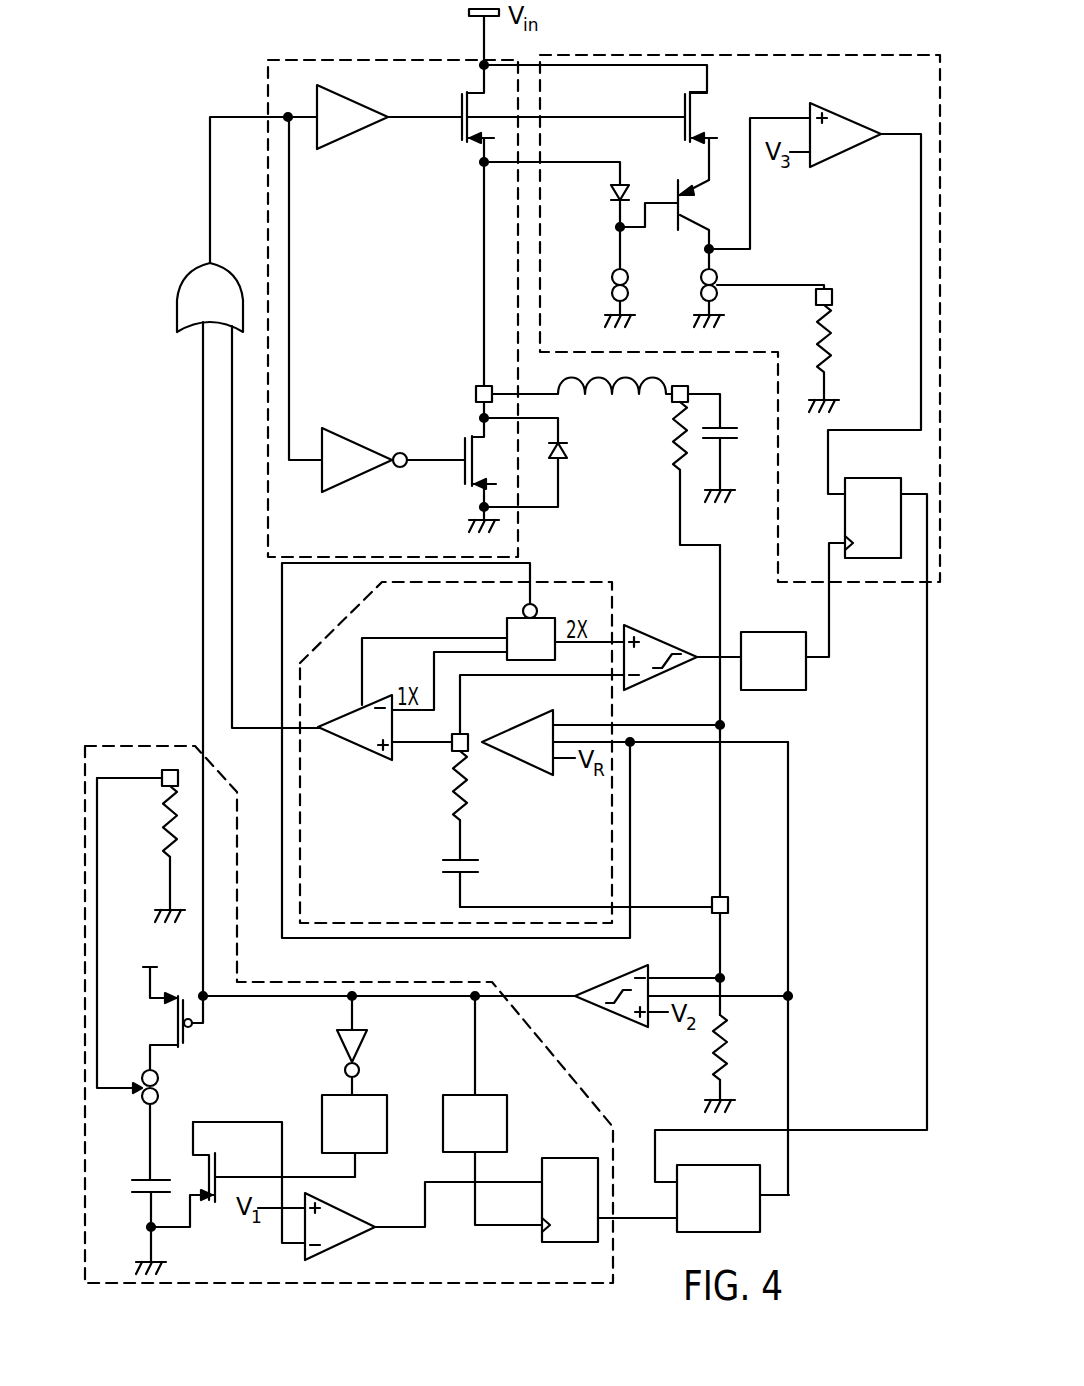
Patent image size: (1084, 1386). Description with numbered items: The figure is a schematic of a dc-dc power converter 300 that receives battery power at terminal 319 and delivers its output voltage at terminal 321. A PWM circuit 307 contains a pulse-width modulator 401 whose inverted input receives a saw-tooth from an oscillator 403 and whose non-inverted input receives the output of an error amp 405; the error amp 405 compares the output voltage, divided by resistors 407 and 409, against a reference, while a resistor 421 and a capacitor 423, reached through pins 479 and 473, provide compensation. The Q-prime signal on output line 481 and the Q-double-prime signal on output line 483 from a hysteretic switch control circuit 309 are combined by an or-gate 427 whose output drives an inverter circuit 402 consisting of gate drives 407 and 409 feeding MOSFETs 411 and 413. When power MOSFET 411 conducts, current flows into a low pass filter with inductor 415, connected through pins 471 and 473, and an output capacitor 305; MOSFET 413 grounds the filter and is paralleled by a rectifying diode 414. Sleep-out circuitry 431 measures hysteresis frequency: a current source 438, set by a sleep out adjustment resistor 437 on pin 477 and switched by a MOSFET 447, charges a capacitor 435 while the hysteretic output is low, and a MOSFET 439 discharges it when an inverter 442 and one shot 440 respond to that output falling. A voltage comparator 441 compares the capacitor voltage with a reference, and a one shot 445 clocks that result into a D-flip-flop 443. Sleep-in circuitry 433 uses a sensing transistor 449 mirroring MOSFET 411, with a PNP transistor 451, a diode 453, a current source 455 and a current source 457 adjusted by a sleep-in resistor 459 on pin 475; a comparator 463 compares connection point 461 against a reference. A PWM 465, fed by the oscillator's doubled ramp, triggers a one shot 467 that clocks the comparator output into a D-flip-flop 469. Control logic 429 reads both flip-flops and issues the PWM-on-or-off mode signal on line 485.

The power converter 300 is at (167, 508).
The capacitor 305 is at (728, 443).
The PWM circuit 307 is at (343, 620).
The hysteretic switch control circuit 309 is at (633, 1021).
The terminal 319 is at (466, 17).
The terminal 321 is at (673, 400).
The pulse-width modulator 401 is at (375, 753).
The inverter circuit 402 is at (329, 58).
The oscillator 403 is at (513, 615).
The error amp 405 is at (535, 768).
The gate drive 407 is at (350, 95).
The gate drive 409 is at (350, 440).
The power MOSFET 411 is at (460, 133).
The MOSFET 413 is at (462, 473).
The rectifying diode 414 is at (568, 449).
The inductor 415 is at (621, 400).
The resistor 421 is at (454, 808).
The capacitor 423 is at (457, 874).
The or-gate 427 is at (187, 279).
The control logic 429 is at (700, 1164).
The sleep-out circuitry 431 is at (124, 748).
The sleep-in circuitry 433 is at (806, 52).
The capacitor 435 is at (145, 1194).
The sleep out adjustment resistor 437 is at (164, 847).
The current source 438 is at (160, 1090).
The MOSFET 439 is at (217, 1165).
The one shot 440 is at (389, 1111).
The voltage comparator 441 is at (343, 1243).
The inverter 442 is at (339, 1043).
The D-flip-flop 443 is at (556, 1159).
The one shot 445 is at (442, 1124).
The MOSFET 447 is at (172, 1013).
The sensing transistor 449 is at (684, 126).
The PNP transistor 451 is at (683, 214).
The diode 453 is at (612, 196).
The current source 455 is at (612, 292).
The current source 457 is at (700, 292).
The sleep-in resistor 459 is at (837, 368).
The connection point 461 is at (706, 249).
The comparator 463 is at (839, 114).
The PWM 465 is at (665, 641).
The one shot 467 is at (765, 633).
The D-flip-flop 469 is at (859, 478).
The pin 471 is at (477, 389).
The pin 473 is at (714, 896).
The pin 475 is at (834, 297).
The pin 477 is at (159, 792).
The pin 479 is at (448, 753).
The output line 481 is at (257, 743).
The output line 483 is at (550, 1011).
The line 485 is at (791, 1221).